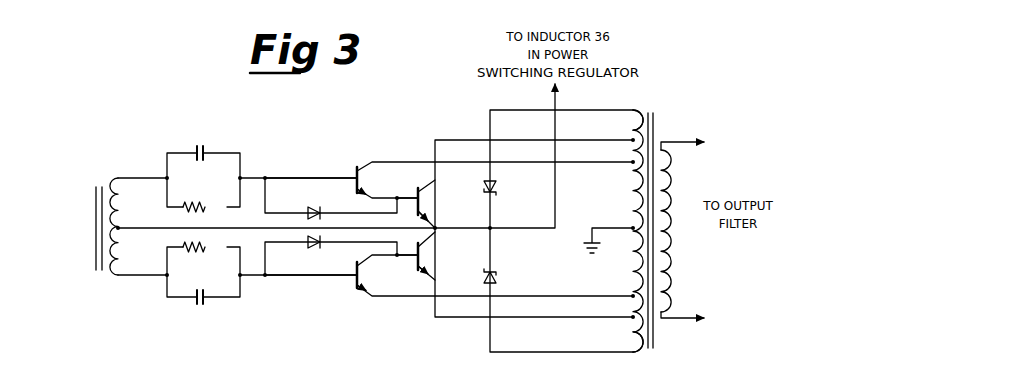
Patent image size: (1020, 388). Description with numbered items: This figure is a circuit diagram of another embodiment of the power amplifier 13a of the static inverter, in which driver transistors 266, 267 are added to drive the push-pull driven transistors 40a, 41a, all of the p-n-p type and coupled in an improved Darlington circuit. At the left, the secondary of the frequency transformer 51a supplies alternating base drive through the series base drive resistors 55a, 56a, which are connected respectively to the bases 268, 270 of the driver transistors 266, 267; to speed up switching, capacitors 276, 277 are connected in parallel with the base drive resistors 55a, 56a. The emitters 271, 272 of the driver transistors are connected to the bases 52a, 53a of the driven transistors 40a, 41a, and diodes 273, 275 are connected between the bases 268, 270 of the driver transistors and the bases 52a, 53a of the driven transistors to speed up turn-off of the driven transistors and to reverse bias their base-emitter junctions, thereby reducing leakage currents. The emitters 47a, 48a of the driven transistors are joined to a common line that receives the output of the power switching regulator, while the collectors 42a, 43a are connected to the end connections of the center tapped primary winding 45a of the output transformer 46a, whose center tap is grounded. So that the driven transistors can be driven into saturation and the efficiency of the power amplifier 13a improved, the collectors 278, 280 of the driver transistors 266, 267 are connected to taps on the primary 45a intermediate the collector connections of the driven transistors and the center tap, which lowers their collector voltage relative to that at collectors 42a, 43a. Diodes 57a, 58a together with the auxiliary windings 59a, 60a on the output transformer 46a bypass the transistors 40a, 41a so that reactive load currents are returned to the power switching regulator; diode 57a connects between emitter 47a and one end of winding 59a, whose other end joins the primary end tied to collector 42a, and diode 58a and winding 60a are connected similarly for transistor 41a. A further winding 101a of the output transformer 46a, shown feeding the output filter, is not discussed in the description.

The power amplifier 13a is at (462, 135).
The driven transistor 40a is at (438, 199).
The driven transistor 41a is at (438, 260).
The collector 42a is at (436, 188).
The collector 43a is at (437, 279).
The primary winding 45a is at (631, 186).
The output transformer 46a is at (664, 123).
The emitter 47a is at (437, 217).
The emitter 48a is at (437, 249).
The frequency transformer 51a is at (91, 174).
The base 52a is at (406, 197).
The base 53a is at (413, 273).
The base drive resistor 55a is at (203, 182).
The base drive resistor 56a is at (192, 251).
The diode 57a is at (496, 187).
The diode 58a is at (495, 277).
The auxiliary winding 59a is at (632, 126).
The auxiliary winding 60a is at (632, 335).
The secondary winding 101a is at (671, 172).
The driver transistor 266 is at (349, 168).
The driver transistor 267 is at (350, 285).
The base 268 is at (292, 177).
The base 270 is at (310, 281).
The emitter 271 is at (374, 198).
The emitter 272 is at (370, 256).
The diode 273 is at (313, 208).
The diode 275 is at (317, 249).
The capacitor 276 is at (204, 148).
The capacitor 277 is at (210, 301).
The collector 278 is at (367, 162).
The collector 280 is at (365, 297).